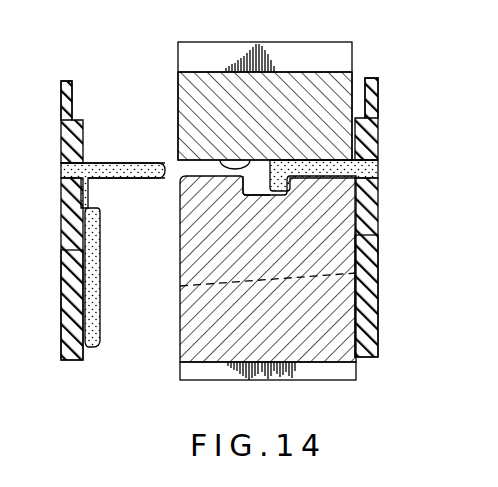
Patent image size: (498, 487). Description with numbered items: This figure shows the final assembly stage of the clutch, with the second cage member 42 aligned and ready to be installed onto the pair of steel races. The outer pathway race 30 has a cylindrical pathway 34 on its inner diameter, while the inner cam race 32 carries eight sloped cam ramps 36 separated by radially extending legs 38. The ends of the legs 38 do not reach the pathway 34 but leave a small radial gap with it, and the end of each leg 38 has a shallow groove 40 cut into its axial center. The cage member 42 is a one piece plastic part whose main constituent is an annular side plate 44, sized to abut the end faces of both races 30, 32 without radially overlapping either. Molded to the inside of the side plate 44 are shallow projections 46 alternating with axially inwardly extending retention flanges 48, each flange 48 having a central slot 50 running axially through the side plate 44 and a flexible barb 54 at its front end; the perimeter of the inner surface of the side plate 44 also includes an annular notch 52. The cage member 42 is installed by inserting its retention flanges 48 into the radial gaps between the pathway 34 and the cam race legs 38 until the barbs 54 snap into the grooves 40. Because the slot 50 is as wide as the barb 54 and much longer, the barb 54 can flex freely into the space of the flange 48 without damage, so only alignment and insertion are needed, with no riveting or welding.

The outer pathway race 30 is at (210, 38).
The inner cam race 32 is at (303, 388).
The cylindrical pathway 34 is at (212, 160).
The sloped cam ramps 36 is at (357, 273).
The radially extending legs 38 is at (220, 258).
The shallow groove 40 is at (248, 192).
The cage member 42 is at (64, 72).
The annular side plate 44 is at (66, 256).
The shallow projections 46 is at (97, 273).
The retention flange 48 is at (120, 163).
The slot 50 is at (96, 163).
The annular notch 52 is at (73, 91).
The barb 54 is at (158, 182).